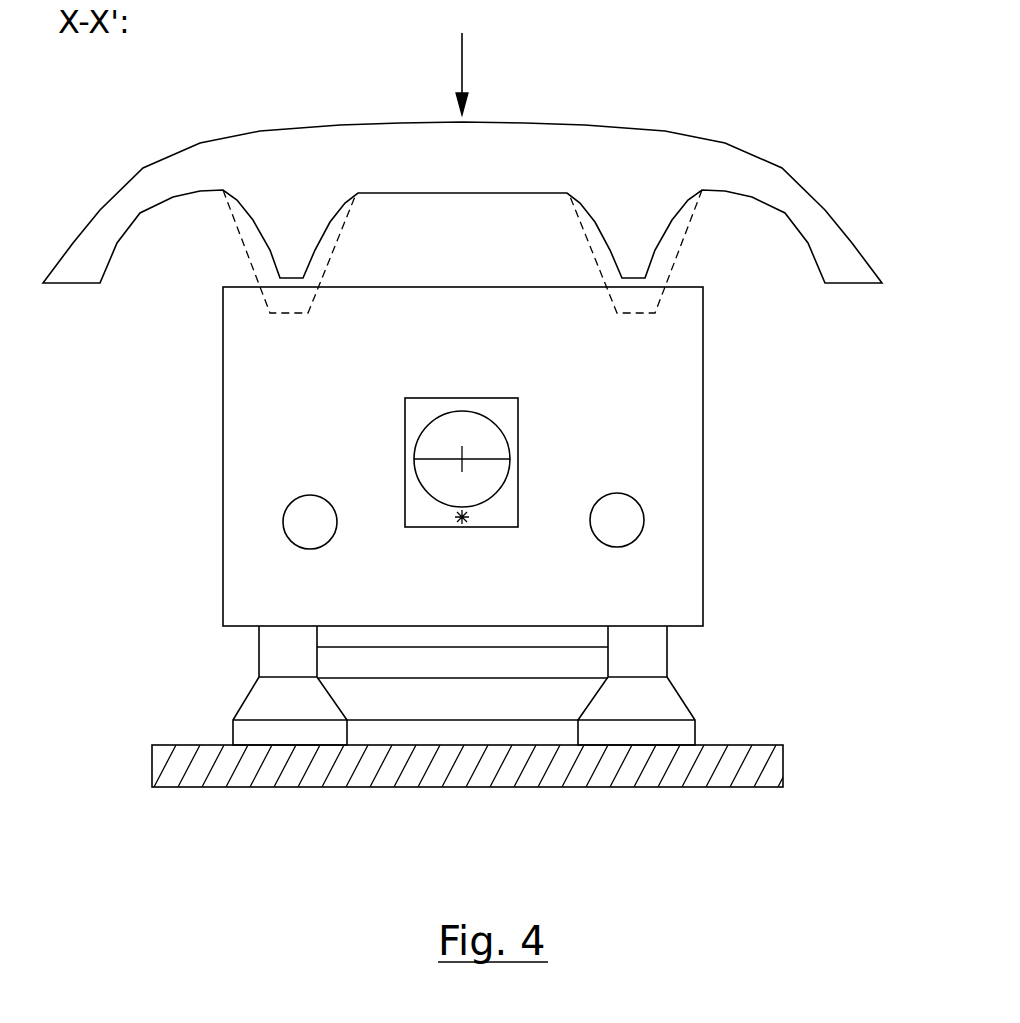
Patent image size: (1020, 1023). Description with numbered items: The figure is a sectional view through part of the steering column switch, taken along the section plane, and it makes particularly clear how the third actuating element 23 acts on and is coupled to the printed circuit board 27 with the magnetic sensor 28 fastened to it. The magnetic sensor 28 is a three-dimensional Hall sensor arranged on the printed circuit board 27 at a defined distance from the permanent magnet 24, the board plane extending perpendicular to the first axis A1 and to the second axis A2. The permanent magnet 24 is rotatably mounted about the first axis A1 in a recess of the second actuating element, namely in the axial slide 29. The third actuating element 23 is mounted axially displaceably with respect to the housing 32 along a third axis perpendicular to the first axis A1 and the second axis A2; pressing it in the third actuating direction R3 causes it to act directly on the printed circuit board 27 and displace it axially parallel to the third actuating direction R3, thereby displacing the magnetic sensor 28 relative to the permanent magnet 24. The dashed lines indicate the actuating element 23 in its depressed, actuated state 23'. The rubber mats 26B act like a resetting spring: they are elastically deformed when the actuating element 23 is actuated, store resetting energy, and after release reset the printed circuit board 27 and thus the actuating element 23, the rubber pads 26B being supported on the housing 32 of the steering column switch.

The third actuating element 23 is at (462, 154).
The third actuating element in depressed state 23' is at (505, 251).
The permanent magnet 24 is at (432, 422).
The printed circuit board 27 is at (658, 582).
The magnetic sensor 28 is at (508, 412).
The axial slide 29 is at (302, 522).
The rubber mats 26B is at (255, 707).
The housing 32 is at (700, 777).
The first axis A1 is at (458, 458).
The second axis A2 is at (462, 517).
The third actuating direction R3 is at (480, 74).